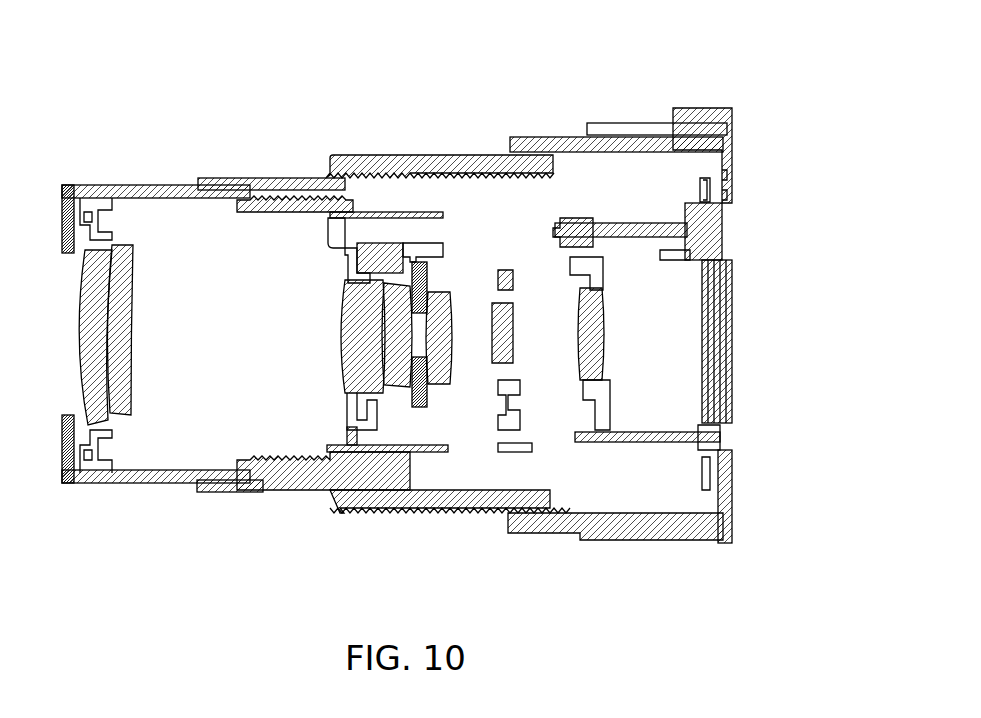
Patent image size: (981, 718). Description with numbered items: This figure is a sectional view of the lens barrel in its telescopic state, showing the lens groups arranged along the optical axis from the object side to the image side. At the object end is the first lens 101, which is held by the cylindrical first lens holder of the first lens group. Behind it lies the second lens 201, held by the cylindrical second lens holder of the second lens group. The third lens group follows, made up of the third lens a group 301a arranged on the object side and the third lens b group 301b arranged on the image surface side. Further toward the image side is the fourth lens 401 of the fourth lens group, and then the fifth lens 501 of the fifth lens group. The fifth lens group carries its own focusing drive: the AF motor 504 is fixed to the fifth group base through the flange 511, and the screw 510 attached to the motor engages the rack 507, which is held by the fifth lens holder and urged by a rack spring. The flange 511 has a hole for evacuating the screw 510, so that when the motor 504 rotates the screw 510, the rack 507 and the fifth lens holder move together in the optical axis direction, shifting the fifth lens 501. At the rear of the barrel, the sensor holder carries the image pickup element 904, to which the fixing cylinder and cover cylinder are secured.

The first lens 101 is at (122, 340).
The second lens 201 is at (354, 347).
The third lens a group 301a is at (401, 345).
The third lens b group 301b is at (438, 340).
The fourth lens 401 is at (503, 317).
The fifth lens 501 is at (592, 337).
The motor 504 is at (705, 227).
The rack 507 is at (585, 243).
The screw 510 is at (690, 207).
The flange 511 is at (622, 228).
The image pickup element 904 is at (728, 345).